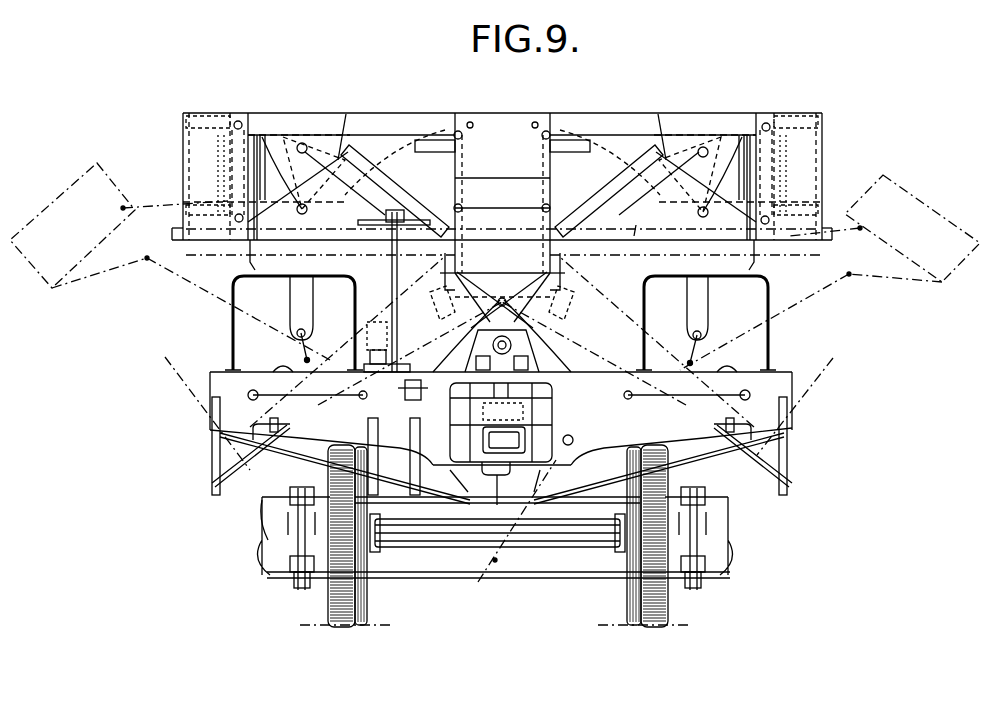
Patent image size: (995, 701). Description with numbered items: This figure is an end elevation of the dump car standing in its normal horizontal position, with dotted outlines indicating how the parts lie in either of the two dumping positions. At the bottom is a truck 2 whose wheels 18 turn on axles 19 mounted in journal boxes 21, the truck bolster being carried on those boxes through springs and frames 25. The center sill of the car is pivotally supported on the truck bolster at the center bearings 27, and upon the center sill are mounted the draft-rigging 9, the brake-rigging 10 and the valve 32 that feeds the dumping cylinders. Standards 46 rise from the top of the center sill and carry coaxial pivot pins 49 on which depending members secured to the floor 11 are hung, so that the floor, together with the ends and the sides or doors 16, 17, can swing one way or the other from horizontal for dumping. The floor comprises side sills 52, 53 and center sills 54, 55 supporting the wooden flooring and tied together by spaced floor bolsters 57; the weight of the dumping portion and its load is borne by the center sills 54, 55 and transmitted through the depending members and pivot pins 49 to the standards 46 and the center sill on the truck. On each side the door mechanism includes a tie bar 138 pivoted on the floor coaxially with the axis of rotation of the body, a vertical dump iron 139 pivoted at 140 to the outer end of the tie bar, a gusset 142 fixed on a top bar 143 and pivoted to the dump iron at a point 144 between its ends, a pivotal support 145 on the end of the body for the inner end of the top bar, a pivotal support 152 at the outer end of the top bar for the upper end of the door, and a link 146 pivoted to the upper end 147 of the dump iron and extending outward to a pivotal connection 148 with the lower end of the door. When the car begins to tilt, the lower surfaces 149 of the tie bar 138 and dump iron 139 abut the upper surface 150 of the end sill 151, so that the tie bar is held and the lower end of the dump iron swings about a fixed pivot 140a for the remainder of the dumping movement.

The truck 2 is at (497, 543).
The draft-rigging 9 is at (508, 440).
The brake-rigging 10 is at (496, 562).
The floor 11 is at (637, 234).
The side or door 16 is at (196, 139).
The side or door 17 is at (802, 132).
The wheels 18 is at (328, 599).
The axles 19 is at (428, 540).
The journal boxes 21 is at (278, 540).
The frames 25 is at (296, 577).
The center bearings 27 is at (498, 480).
The valve 32 is at (505, 364).
The standards 46 is at (538, 360).
The pivot pins 49 is at (470, 338).
The side sill 52 is at (250, 262).
The side sill 53 is at (754, 262).
The center sill 54 is at (445, 260).
The center sill 55 is at (561, 260).
The floor bolsters 57 is at (356, 262).
The tie bar 138 is at (330, 335).
The dump iron 139 is at (300, 300).
The pivot 140 is at (296, 335).
The fixed pivot 140a is at (300, 358).
The gusset 142 is at (331, 150).
The top bar 143 is at (392, 122).
The pivot point 144 is at (298, 200).
The pivotal support 145 is at (536, 124).
The link 146 is at (261, 193).
The upper end of dump iron 147 is at (303, 141).
The pivotal connection 148 is at (236, 216).
The lower surfaces 149 is at (305, 358).
The upper surface 150 is at (828, 413).
The end sill 151 is at (235, 410).
The pivotal support 152 is at (238, 121).